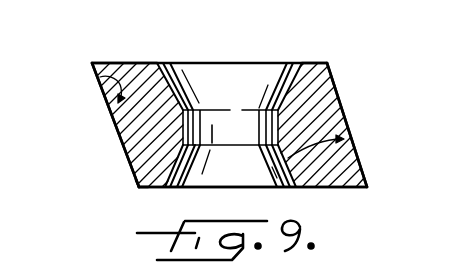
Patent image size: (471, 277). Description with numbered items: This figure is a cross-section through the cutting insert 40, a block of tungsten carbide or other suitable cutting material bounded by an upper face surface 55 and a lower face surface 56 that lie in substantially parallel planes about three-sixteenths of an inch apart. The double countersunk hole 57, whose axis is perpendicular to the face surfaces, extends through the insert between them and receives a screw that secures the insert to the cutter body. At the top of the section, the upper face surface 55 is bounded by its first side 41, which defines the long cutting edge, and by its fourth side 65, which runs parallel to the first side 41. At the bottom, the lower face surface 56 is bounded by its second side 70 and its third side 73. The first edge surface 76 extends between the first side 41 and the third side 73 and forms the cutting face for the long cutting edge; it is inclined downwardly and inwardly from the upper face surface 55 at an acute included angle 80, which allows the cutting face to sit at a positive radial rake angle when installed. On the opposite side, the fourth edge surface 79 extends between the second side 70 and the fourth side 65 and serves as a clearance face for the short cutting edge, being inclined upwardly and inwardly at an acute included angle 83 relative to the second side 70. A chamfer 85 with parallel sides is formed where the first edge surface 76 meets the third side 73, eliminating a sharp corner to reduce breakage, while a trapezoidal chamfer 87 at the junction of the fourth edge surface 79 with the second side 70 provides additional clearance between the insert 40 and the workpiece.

The insert 40 is at (263, 56).
The first side 41 is at (92, 63).
The upper face surface 55 is at (137, 80).
The lower face surface 56 is at (311, 188).
The double countersunk hole 57 is at (198, 112).
The fourth side 65 is at (327, 63).
The second side 70 is at (320, 168).
The third side 73 is at (146, 188).
The first edge surface 76 is at (114, 122).
The fourth edge surface 79 is at (337, 100).
The acute included angle 80 is at (100, 77).
The acute included angle 83 is at (282, 158).
The chamfer 85 is at (140, 184).
The trapezoidal chamfer 87 is at (364, 168).